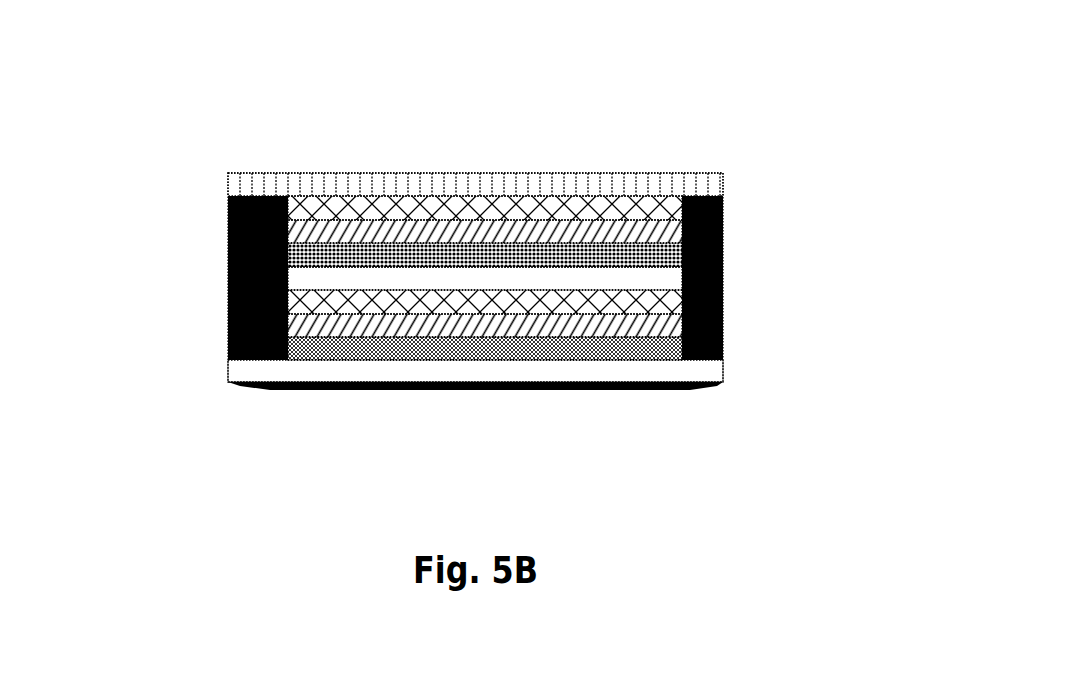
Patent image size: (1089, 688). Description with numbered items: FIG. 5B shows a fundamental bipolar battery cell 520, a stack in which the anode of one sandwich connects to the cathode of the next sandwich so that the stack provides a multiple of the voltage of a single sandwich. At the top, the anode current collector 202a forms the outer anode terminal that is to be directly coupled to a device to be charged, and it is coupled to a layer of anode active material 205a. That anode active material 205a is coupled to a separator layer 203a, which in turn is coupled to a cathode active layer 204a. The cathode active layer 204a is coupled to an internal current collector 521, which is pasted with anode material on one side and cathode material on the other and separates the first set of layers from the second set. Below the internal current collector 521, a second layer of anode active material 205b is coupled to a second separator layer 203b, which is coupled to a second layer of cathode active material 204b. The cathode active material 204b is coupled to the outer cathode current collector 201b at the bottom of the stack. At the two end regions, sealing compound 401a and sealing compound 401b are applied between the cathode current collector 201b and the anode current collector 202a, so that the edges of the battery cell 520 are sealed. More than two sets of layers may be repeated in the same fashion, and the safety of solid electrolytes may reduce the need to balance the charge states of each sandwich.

The bipolar battery cell 520 is at (981, 76).
The anode current collector 202a is at (723, 183).
The anode active material 205a is at (660, 212).
The separator layer 203a is at (660, 237).
The cathode active layer 204a is at (660, 262).
The internal current collector 521 is at (660, 276).
The anode active material 205b is at (660, 302).
The separator layer 203b is at (655, 328).
The cathode active material 204b is at (228, 328).
The sealing compound 401a is at (228, 252).
The sealing compound 401b is at (723, 352).
The cathode current collector 201b is at (547, 372).